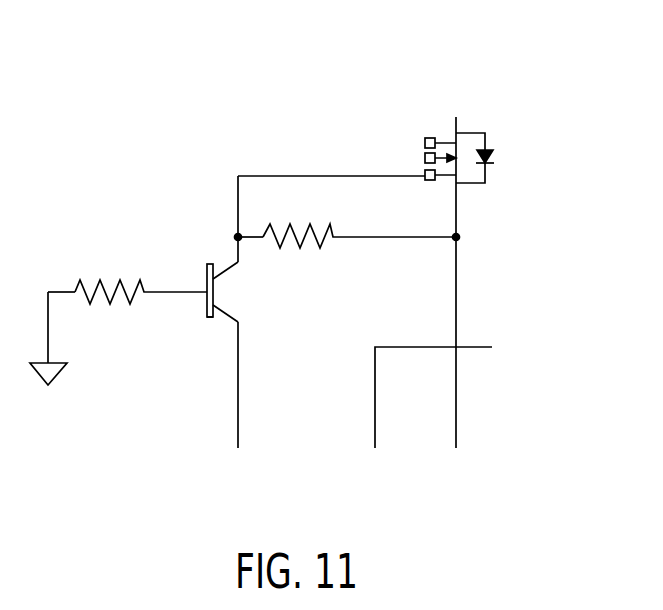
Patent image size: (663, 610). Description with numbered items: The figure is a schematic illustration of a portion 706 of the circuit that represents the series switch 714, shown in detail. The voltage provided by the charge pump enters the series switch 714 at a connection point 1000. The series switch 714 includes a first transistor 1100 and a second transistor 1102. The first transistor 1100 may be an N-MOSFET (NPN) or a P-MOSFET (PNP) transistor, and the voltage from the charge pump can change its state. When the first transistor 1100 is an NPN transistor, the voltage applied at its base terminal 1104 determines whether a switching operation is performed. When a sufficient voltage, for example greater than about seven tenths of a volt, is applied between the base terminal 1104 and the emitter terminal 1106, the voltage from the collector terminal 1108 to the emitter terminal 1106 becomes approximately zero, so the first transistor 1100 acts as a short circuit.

The portion of the circuit 706 is at (128, 82).
The series switch 714 is at (105, 162).
The second transistor 1102 is at (456, 127).
The base terminal 1104 is at (205, 287).
The collector terminal 1108 is at (237, 265).
The emitter terminal 1106 is at (229, 313).
The first transistor 1100 is at (202, 318).
The connection point 1000 is at (237, 442).